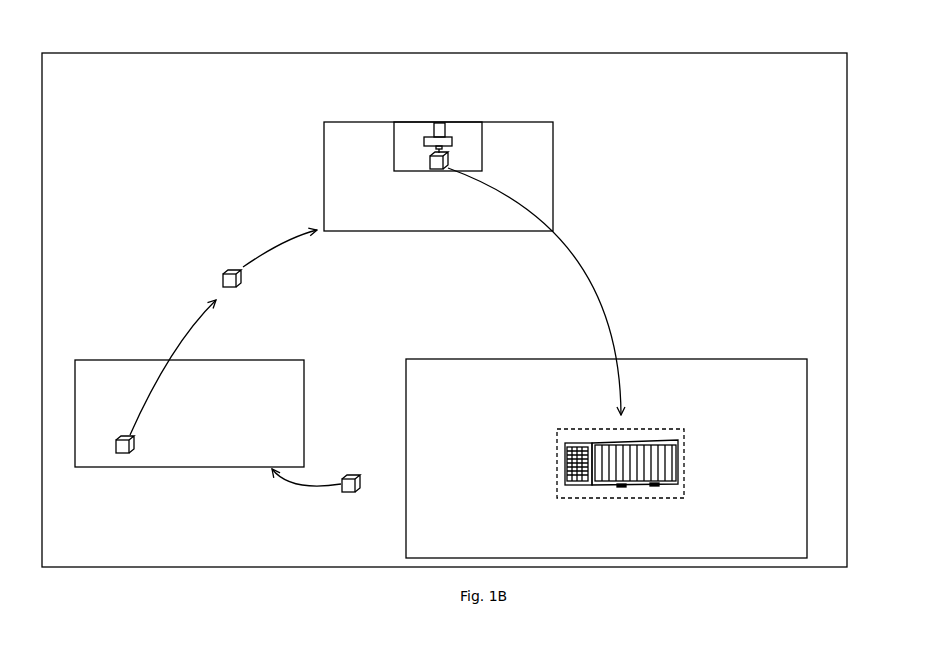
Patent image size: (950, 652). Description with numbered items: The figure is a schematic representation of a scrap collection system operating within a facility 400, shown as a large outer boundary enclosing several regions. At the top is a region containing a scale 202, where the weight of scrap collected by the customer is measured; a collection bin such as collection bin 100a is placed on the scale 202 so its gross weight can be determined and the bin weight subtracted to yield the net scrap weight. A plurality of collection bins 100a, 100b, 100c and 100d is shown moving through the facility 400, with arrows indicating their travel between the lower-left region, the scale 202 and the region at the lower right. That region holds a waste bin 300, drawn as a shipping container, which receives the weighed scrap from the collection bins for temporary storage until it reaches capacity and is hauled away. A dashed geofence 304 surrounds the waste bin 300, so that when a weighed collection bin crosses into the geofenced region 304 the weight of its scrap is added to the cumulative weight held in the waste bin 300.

The facility 400 is at (763, 53).
The scale 202 is at (413, 130).
The collection bin 100a is at (447, 158).
The collection bin 100b is at (242, 279).
The collection bin 100c is at (122, 454).
The collection bin 100d is at (362, 484).
The geofence 304 is at (683, 428).
The waste bin 300 is at (678, 483).